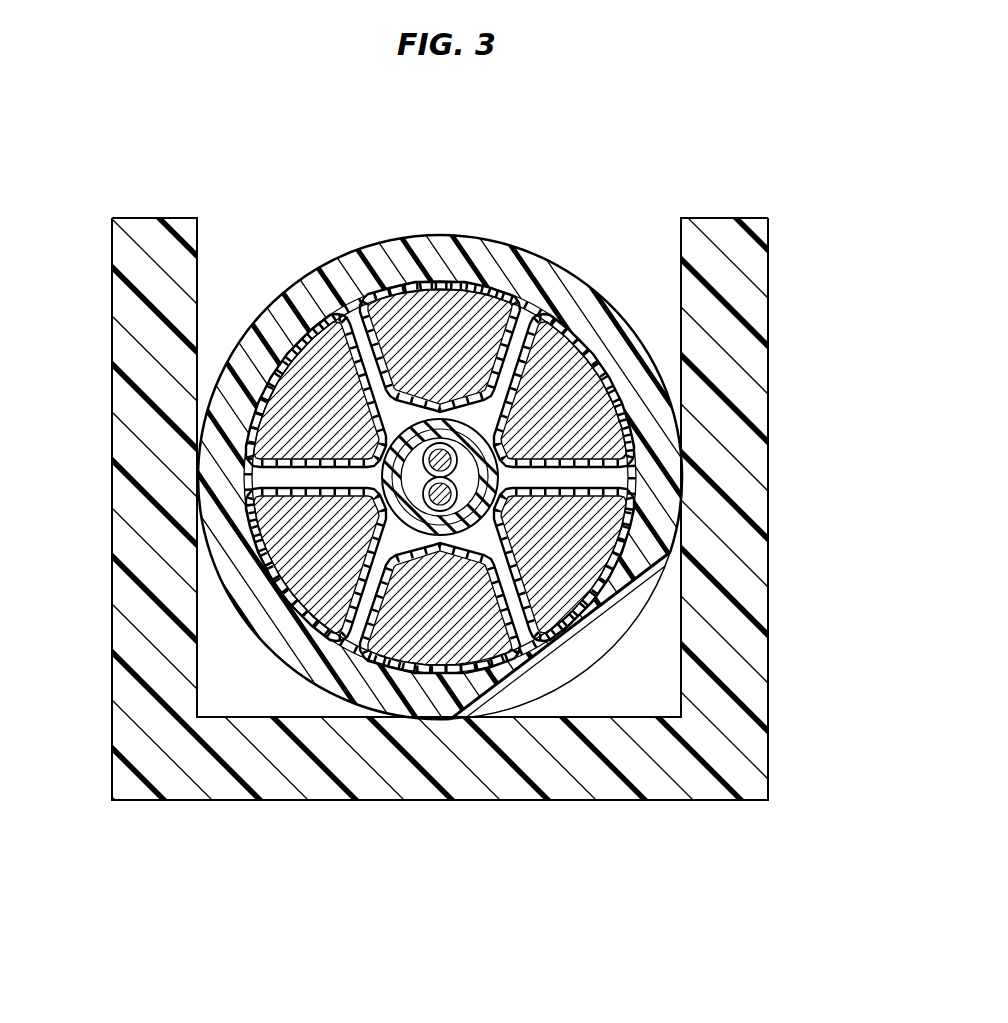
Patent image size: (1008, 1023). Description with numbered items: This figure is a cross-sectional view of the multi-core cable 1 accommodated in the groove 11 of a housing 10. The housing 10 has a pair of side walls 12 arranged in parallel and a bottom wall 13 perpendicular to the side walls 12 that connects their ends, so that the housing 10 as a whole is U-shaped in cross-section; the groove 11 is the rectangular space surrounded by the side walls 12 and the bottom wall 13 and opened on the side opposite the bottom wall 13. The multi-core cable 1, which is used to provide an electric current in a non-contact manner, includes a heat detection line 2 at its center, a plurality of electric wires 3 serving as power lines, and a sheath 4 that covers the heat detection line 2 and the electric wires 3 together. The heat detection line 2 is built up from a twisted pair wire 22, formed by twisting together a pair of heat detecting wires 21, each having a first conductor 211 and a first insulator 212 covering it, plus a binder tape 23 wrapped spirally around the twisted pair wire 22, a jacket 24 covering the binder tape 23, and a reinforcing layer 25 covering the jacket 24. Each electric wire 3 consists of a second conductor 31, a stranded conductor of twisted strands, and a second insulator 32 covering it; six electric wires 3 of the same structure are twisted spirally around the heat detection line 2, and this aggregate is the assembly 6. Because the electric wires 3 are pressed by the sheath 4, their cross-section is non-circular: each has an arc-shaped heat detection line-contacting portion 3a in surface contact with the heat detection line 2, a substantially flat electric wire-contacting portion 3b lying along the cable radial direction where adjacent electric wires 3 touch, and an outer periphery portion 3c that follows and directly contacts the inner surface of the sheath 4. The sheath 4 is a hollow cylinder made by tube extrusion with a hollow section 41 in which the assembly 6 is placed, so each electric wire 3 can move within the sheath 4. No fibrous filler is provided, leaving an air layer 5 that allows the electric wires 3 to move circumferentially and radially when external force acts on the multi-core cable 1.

The multi-core cable 1 is at (504, 515).
The heat detection line 2 is at (582, 427).
The electric wire 3 is at (504, 534).
The heat detection line-contacting portion 3a is at (305, 625).
The electric wire-contacting portion 3b is at (297, 420).
The outer periphery portion 3c is at (268, 605).
The sheath 4 is at (561, 635).
The hollow section 41 is at (587, 660).
The air layer 5 is at (250, 488).
The assembly 6 is at (352, 312).
The housing 10 is at (504, 494).
The groove 11 is at (662, 217).
The side wall 12 is at (130, 297).
The bottom wall 13 is at (578, 782).
The heat detecting wire 21 is at (463, 446).
The first conductor 211 is at (548, 290).
The first insulator 212 is at (538, 312).
The twisted pair wire 22 is at (628, 340).
The binder tape 23 is at (482, 437).
The jacket 24 is at (472, 451).
The reinforcing layer 25 is at (464, 486).
The second conductor 31 is at (612, 518).
The second insulator 32 is at (600, 531).